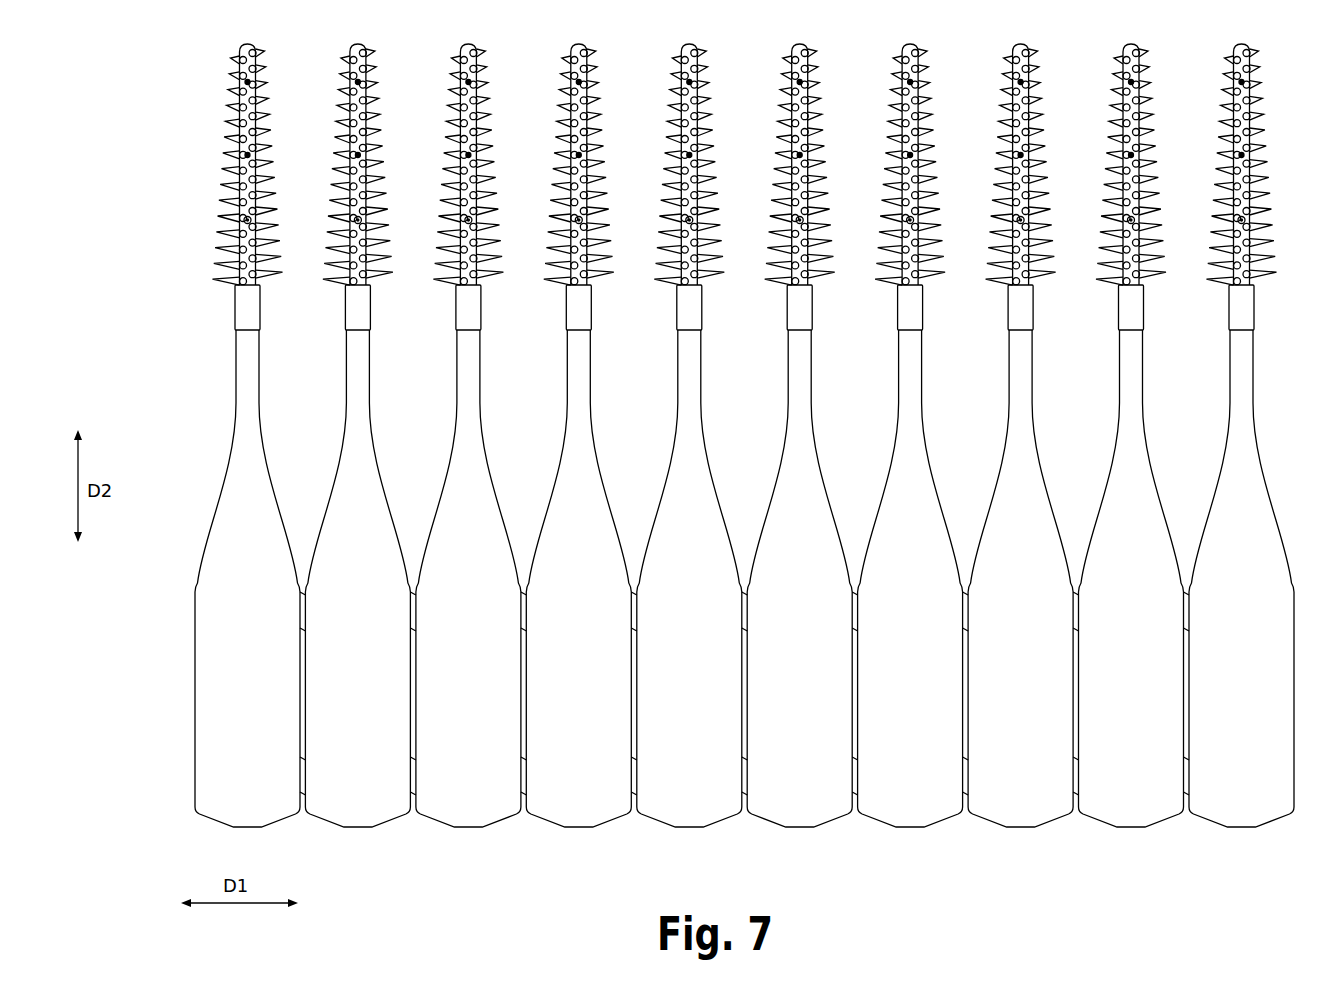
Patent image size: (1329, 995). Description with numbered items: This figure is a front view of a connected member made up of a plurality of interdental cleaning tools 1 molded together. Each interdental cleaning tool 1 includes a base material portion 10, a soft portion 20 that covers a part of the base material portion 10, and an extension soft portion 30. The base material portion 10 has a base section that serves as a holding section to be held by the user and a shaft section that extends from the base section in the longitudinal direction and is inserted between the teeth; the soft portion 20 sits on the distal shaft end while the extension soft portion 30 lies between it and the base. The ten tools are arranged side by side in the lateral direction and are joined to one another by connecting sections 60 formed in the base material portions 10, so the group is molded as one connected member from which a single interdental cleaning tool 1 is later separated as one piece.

The interdental cleaning tool 1 is at (302, 473).
The base material portion 10 is at (185, 707).
The soft portion 20 is at (224, 72).
The extension soft portion 30 is at (232, 303).
The connecting section 60 is at (308, 607).